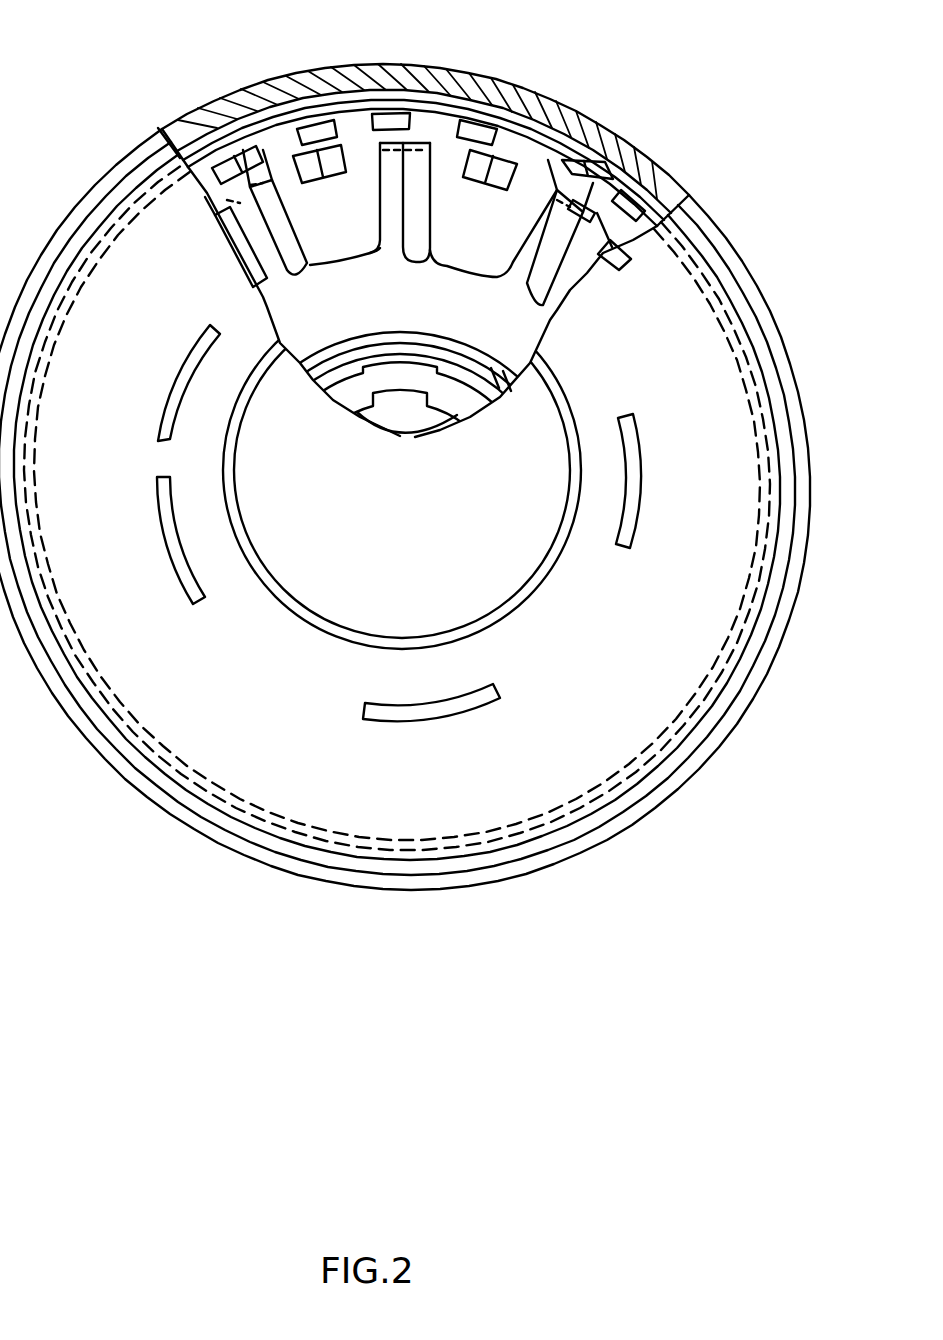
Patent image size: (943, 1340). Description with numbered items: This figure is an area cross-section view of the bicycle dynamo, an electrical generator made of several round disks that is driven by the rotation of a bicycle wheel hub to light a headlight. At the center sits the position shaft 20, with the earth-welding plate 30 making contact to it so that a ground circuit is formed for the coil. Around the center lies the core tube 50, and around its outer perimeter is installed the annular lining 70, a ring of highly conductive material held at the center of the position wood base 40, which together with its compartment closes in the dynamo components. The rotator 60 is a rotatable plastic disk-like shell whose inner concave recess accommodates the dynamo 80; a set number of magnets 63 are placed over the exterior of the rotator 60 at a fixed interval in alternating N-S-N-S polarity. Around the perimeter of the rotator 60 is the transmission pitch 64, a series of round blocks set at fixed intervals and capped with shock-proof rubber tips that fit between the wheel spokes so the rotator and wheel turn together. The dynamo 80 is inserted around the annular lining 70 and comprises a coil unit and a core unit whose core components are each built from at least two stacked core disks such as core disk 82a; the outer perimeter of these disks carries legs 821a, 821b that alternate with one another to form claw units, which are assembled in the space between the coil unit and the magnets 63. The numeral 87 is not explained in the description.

The position shaft 20 is at (375, 419).
The earth-welding plate 30 is at (453, 412).
The position wood base 40 is at (737, 222).
The core tube 50 is at (498, 370).
The rotator 60 is at (593, 165).
The magnets 63 is at (482, 133).
The transmission pitch 64 is at (640, 471).
The annular lining 70 is at (480, 340).
The dynamo 80 is at (365, 150).
The core disk 82a is at (443, 270).
The legs 821a is at (180, 124).
The legs 821b is at (240, 170).
The coil 87 is at (290, 197).